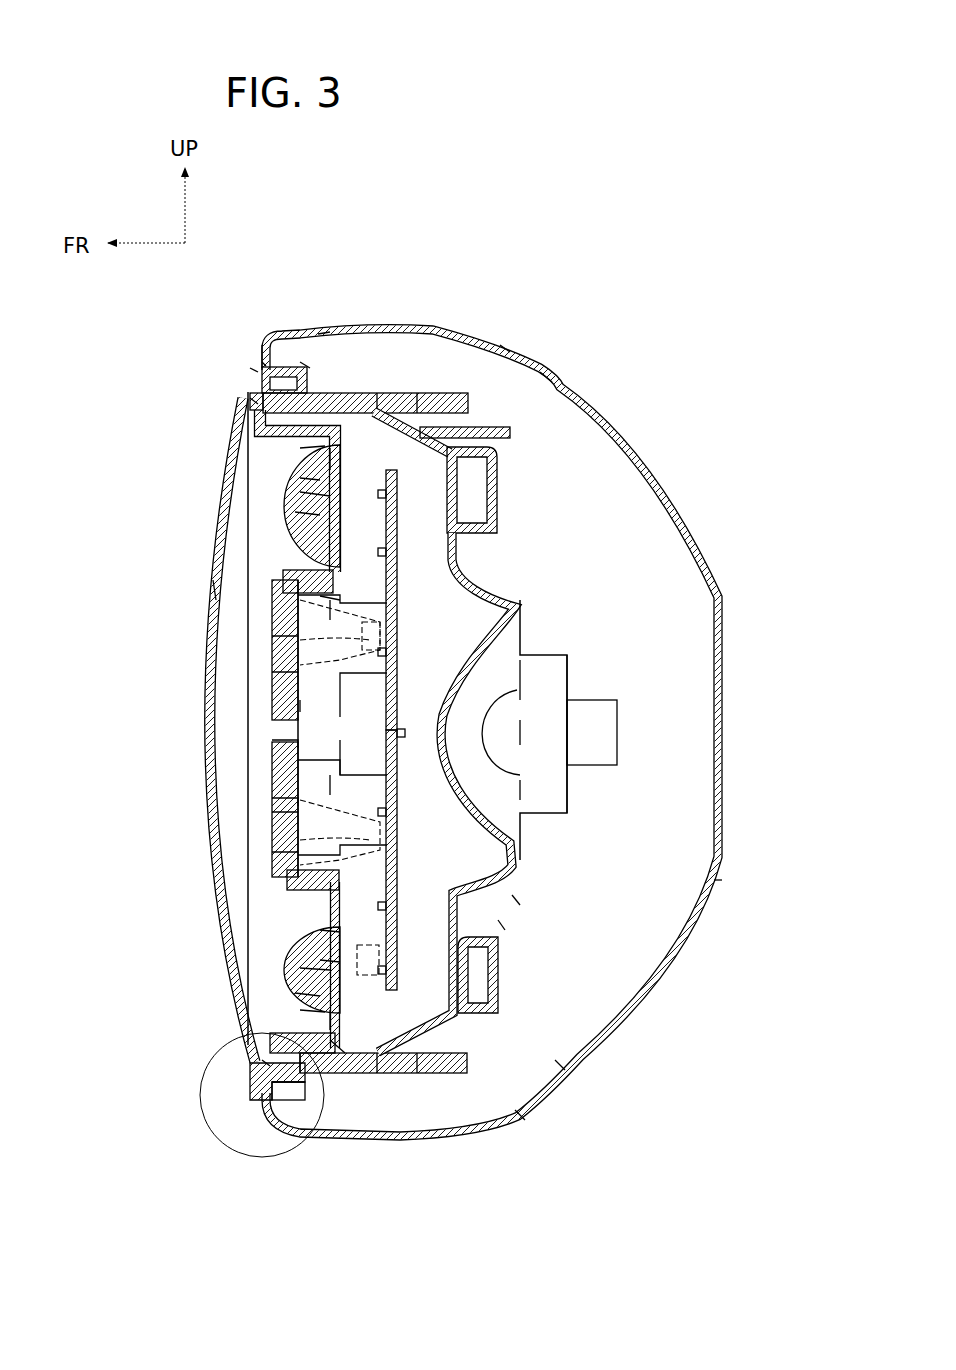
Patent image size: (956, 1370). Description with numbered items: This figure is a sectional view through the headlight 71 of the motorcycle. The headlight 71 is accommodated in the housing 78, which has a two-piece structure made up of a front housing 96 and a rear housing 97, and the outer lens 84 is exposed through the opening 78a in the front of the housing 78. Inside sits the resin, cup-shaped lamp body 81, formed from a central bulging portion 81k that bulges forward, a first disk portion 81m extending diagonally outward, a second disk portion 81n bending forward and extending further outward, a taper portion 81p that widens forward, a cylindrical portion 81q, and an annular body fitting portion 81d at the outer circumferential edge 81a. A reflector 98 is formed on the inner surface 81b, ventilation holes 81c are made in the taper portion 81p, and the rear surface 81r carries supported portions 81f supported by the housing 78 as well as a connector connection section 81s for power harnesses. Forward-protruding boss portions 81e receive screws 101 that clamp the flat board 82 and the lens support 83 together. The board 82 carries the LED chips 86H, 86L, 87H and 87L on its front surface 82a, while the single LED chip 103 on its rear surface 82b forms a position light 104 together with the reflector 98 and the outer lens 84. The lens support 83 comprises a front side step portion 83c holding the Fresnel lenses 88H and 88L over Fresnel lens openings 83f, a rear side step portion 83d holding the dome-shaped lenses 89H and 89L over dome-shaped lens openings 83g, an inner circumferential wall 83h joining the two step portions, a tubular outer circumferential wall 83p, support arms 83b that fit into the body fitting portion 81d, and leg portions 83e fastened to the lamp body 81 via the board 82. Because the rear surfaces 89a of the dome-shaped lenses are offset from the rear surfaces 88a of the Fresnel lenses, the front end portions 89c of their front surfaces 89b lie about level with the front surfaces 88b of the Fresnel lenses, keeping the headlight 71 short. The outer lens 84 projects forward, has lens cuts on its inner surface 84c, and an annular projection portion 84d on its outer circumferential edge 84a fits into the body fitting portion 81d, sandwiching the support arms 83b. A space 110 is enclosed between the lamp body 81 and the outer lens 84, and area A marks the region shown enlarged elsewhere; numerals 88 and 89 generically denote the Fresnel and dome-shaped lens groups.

The headlight 71 is at (150, 352).
The housing 78 is at (640, 452).
The opening 78a is at (265, 358).
The lamp body 81 is at (531, 617).
The outer circumferential edge 81a is at (280, 1100).
The inner surface 81b is at (520, 792).
The ventilation holes 81c is at (397, 398).
The body fitting portion 81d is at (303, 1052).
The boss portions 81e is at (428, 617).
The supported portions 81f is at (505, 352).
The central bulging portion 81k is at (428, 675).
The first disk portion 81m is at (520, 850).
The second disk portion 81n is at (500, 927).
The taper portion 81p is at (560, 1068).
The cylindrical portion 81q is at (337, 1030).
The rear surface 81r is at (520, 903).
The connector connection section 81s is at (522, 732).
The board 82 is at (432, 432).
The front surface 82a is at (404, 428).
The rear surface 82b is at (470, 492).
The lens support 83 is at (270, 896).
The support arms 83b is at (245, 402).
The front side step portion 83c is at (300, 768).
The rear side step portion 83d is at (295, 576).
The leg portions 83e is at (300, 705).
The Fresnel lens openings 83f is at (330, 612).
The dome-shaped lens openings 83g is at (330, 458).
The inner circumferential wall 83h is at (300, 883).
The outer circumferential wall 83p is at (312, 396).
The outer lens 84 is at (205, 572).
The outer circumferential edge 84a is at (248, 368).
The inner surface 84c is at (214, 587).
The annular projection portion 84d is at (305, 366).
The LED chip 86L is at (330, 668).
The LED chip 86H is at (335, 838).
The LED chip 87L is at (387, 472).
The LED chip 87H is at (386, 940).
The lens holder 88 is at (285, 728).
The rear surfaces 88a is at (285, 675).
The front surfaces 88b is at (285, 640).
The Fresnel lens 88L is at (285, 745).
The Fresnel lens 88H is at (285, 800).
The position lamp lens 89 is at (312, 729).
The rear surfaces 89a is at (300, 515).
The front surfaces 89b is at (292, 448).
The front end portions 89c is at (330, 495).
The dome-shaped lens 89L is at (305, 480).
The dome-shaped lens 89H is at (335, 930).
The front housing 96 is at (322, 333).
The rear housing 97 is at (545, 378).
The reflector 98 is at (502, 832).
The screws 101 is at (345, 652).
The LED chip 103 is at (617, 722).
The position light 104 is at (480, 702).
The space 110 is at (472, 632).
The area A is at (281, 1105).